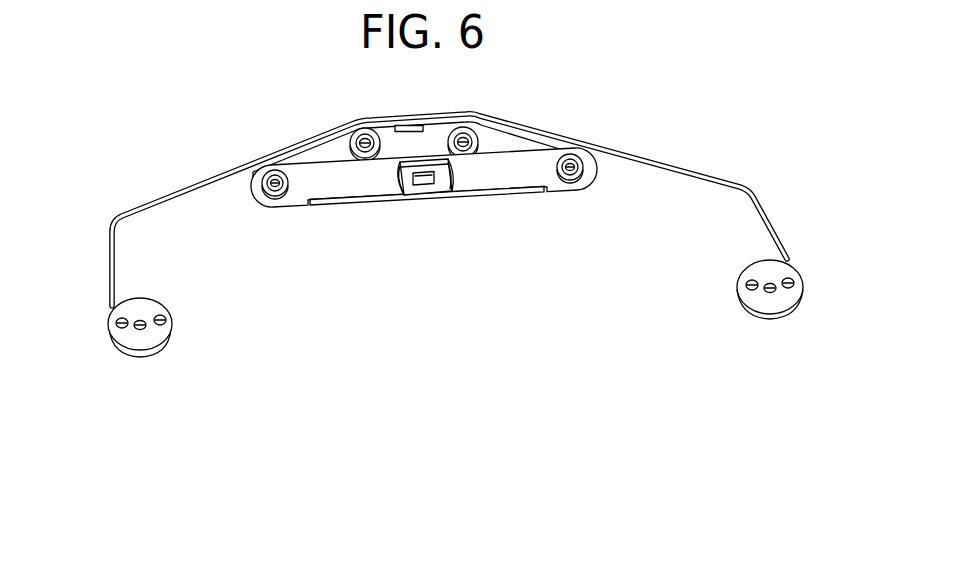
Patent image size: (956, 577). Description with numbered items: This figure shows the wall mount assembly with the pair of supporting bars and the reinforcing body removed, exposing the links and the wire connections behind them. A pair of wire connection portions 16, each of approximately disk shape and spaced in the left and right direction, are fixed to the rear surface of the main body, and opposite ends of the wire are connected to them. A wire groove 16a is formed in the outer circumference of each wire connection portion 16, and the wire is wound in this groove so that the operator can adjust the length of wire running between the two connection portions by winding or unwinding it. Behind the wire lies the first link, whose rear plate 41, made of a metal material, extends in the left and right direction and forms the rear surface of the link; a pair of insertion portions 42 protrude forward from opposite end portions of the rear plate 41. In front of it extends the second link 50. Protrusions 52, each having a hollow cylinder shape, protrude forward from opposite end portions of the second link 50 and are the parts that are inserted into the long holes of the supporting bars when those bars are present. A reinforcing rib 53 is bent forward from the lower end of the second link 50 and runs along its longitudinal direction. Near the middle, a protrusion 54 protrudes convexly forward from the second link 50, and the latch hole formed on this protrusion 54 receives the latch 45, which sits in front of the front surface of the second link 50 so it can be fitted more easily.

The wire connection portion 16 is at (109, 320).
The wire groove 16a is at (145, 353).
The rear plate 41 is at (415, 143).
The insertion portion 42 is at (370, 133).
The latch 45 is at (428, 193).
The second link 50 is at (567, 203).
The protrusion 52 is at (570, 160).
The reinforcing rib 53 is at (468, 196).
The protrusion 54 is at (400, 196).